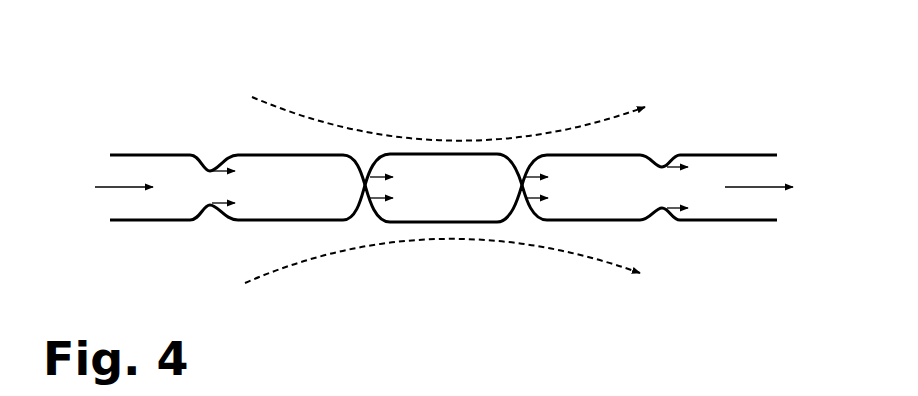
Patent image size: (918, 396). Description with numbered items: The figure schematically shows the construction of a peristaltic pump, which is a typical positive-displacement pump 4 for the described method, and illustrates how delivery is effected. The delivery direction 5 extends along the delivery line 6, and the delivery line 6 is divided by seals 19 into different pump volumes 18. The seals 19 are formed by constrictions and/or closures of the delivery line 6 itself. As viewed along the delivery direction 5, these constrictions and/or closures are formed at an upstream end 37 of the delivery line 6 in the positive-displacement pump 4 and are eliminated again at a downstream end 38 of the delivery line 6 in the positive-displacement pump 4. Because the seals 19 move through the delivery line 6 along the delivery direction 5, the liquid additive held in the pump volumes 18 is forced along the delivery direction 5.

The positive-displacement pump 4 is at (723, 98).
The delivery direction 5 is at (127, 185).
The delivery line 6 is at (170, 153).
The pump volumes 18 is at (282, 202).
The seals 19 is at (365, 187).
The upstream end 37 is at (103, 172).
The downstream end 38 is at (775, 173).